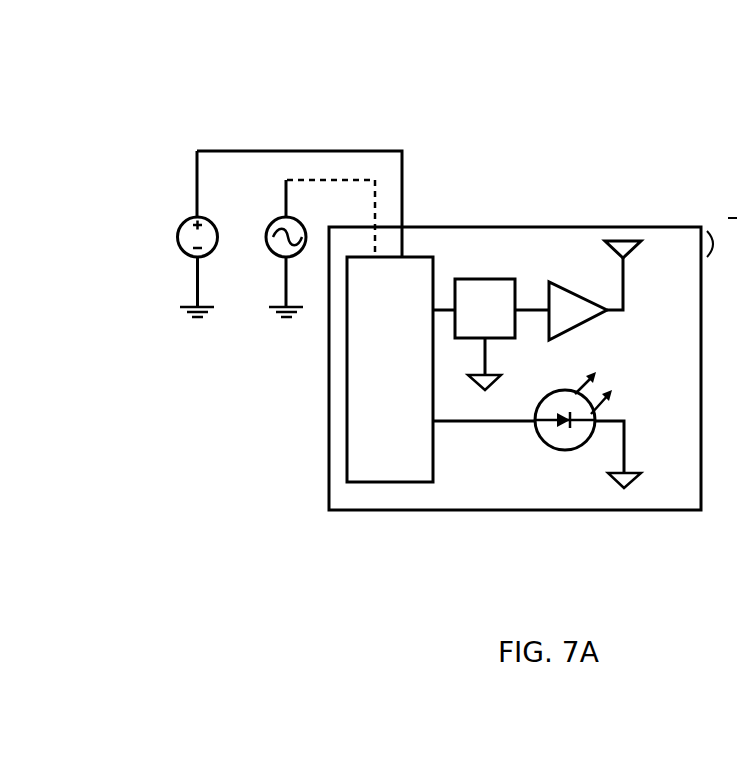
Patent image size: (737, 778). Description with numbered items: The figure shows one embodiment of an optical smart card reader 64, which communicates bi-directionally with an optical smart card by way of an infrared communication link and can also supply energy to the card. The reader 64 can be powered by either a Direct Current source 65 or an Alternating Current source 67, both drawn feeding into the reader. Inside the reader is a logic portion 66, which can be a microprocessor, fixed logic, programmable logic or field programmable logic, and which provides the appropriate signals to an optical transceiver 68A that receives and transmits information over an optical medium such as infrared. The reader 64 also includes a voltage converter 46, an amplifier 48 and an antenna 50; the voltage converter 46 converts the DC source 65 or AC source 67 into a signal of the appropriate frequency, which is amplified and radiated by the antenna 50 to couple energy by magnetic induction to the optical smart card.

The optical smart card reader 64 is at (521, 62).
The Direct Current (DC) source 65 is at (179, 233).
The Alternating Current (AC) source 67 is at (266, 233).
The logic portion 66 is at (421, 257).
The voltage converter 46 is at (489, 279).
The amplifier 48 is at (556, 282).
The antenna 50 is at (627, 273).
The optical transceiver 68A is at (580, 450).